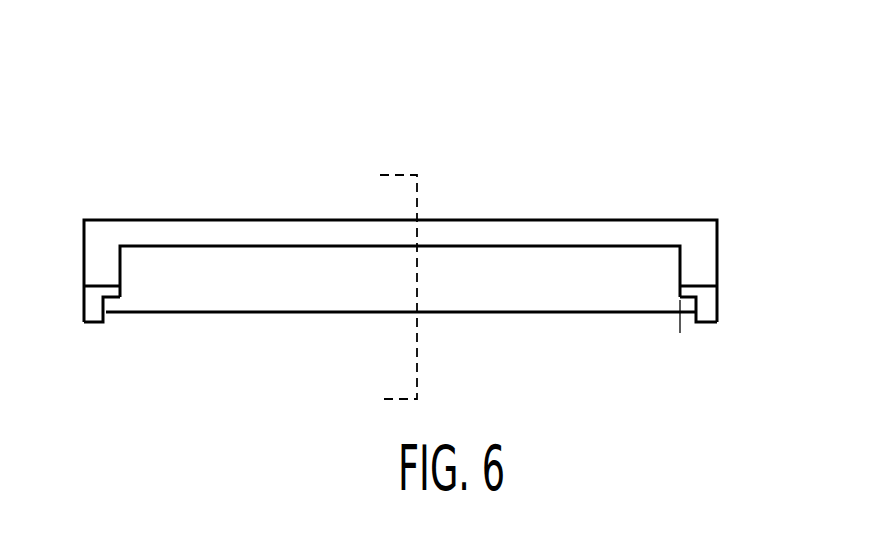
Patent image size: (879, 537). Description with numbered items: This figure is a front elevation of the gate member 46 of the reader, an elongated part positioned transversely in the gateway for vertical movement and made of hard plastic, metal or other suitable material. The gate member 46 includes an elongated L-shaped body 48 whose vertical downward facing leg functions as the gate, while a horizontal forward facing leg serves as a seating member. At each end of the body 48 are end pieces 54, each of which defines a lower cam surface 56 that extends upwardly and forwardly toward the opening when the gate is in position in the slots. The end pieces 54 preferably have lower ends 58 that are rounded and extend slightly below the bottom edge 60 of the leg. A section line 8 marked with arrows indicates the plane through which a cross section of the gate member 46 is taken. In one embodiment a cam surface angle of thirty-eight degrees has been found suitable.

The gate member 46 is at (484, 148).
The L-shaped body 48 is at (563, 283).
The end pieces 54 is at (707, 257).
The lower cam surface 56 is at (710, 299).
The lower ends 58 is at (95, 323).
The bottom edge 60 is at (250, 313).
The section line 8- 8 is at (360, 175).